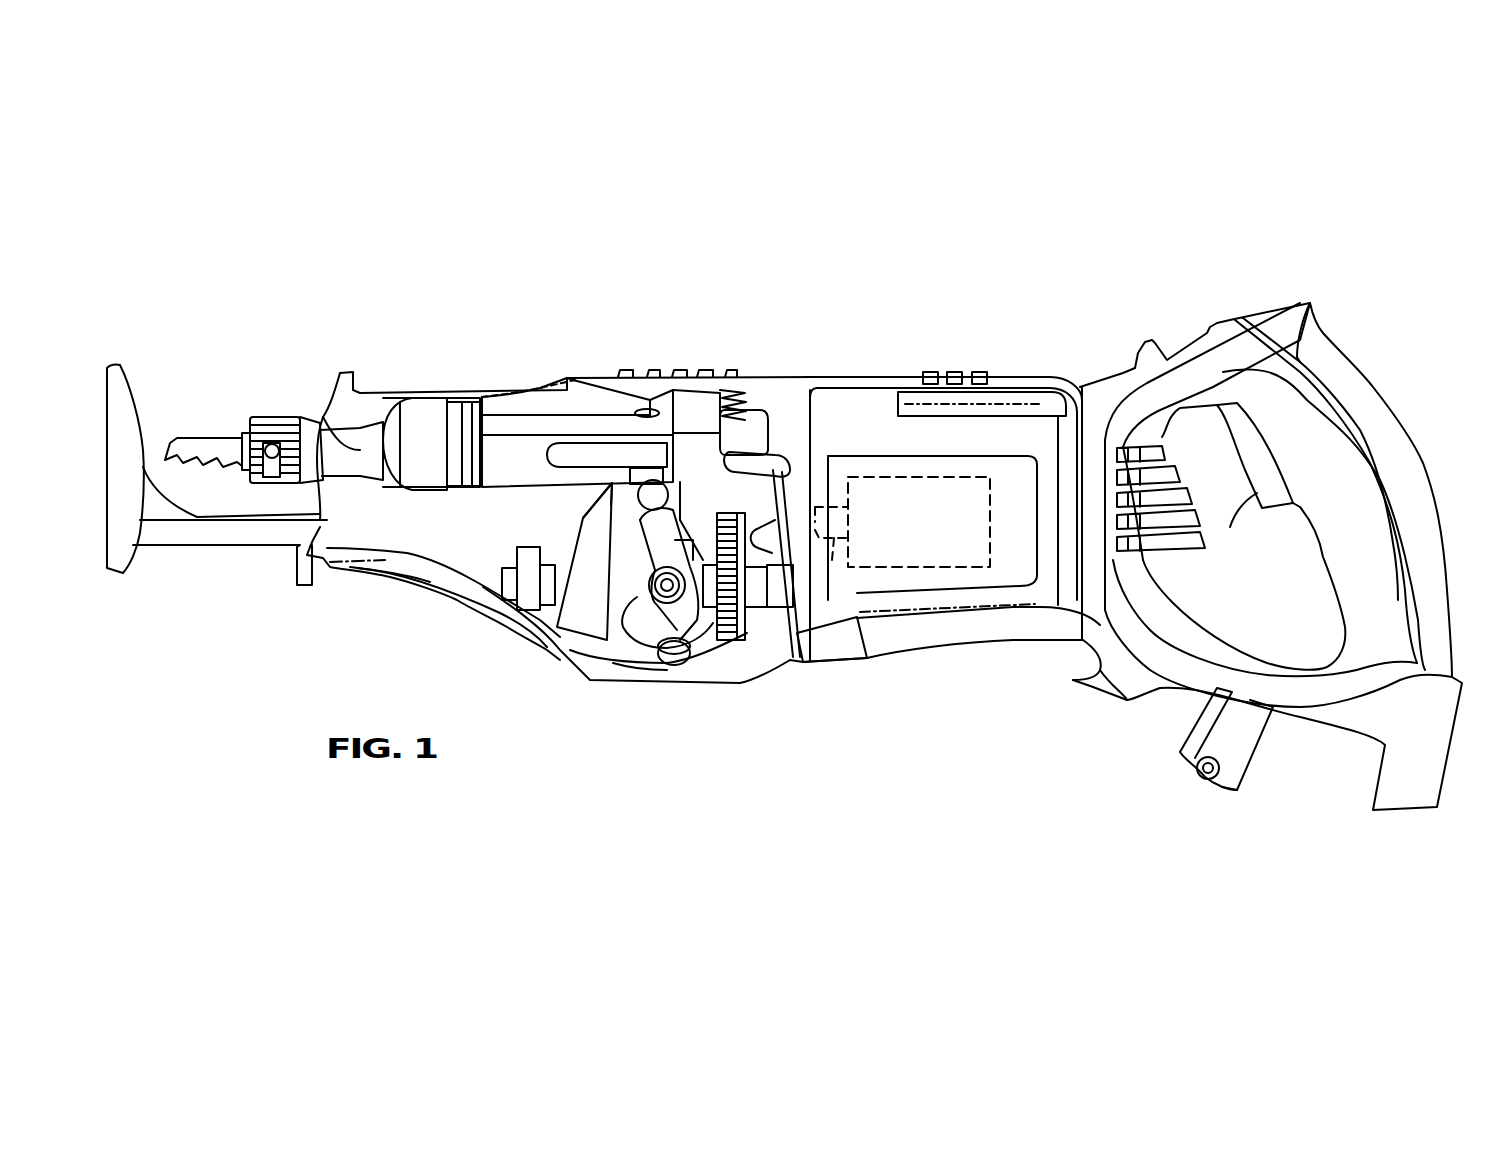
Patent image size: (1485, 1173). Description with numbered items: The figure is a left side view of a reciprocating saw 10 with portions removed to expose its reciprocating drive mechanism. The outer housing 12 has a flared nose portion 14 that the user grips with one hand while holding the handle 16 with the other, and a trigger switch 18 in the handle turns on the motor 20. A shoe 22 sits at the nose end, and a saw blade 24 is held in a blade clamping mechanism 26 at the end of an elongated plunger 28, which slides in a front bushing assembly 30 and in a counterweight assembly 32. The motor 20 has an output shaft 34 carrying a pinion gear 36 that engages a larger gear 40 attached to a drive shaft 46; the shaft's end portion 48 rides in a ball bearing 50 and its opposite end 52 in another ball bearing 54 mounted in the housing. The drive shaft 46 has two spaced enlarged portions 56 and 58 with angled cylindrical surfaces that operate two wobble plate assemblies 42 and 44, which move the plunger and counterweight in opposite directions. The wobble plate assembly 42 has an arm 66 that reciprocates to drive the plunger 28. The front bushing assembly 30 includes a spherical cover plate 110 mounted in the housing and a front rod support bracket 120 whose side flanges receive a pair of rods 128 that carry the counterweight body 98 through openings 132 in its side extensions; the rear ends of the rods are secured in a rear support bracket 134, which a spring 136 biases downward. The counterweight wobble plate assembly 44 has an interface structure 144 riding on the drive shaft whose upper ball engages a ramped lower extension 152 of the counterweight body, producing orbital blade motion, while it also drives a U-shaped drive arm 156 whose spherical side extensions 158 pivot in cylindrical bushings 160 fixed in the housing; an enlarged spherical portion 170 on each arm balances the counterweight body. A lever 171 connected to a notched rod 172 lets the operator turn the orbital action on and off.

The reciprocating saw 10 is at (1030, 278).
The outer housing 12 is at (948, 635).
The nose portion 14 is at (337, 385).
The handle 16 is at (1300, 438).
The trigger switch 18 is at (1257, 493).
The motor 20 is at (880, 478).
The shoe 22 is at (122, 400).
The saw blade 24 is at (194, 447).
The blade clamping mechanism 26 is at (270, 420).
The elongated plunger 28 is at (345, 453).
The front bushing assembly 30 is at (415, 397).
The counterweight assembly 32 is at (625, 388).
The output shaft 34 is at (830, 550).
The pinion gear 36 is at (765, 527).
The larger gear 40 is at (735, 627).
The wobble plate assembly 42 is at (603, 643).
The counterweight wobble plate assembly 44 is at (650, 670).
The drive shaft 46 is at (708, 595).
The end portion 48 is at (778, 600).
The ball bearing 50 is at (795, 667).
The opposite end 52 is at (546, 645).
The ball bearing 54 is at (528, 555).
The enlarged portion 56 is at (565, 552).
The enlarged portion 58 is at (692, 556).
The arm 66 is at (578, 618).
The counterweight body 98 is at (507, 406).
The spherical cover plate 110 is at (413, 465).
The front rod support bracket 120 is at (458, 410).
The rods 128 is at (700, 430).
The openings 132 is at (507, 447).
The rear support bracket 134 is at (742, 427).
The spring 136 is at (734, 405).
The interface structure 144 is at (612, 481).
The lower extension 152 is at (675, 477).
The U-shaped drive arm 156 is at (676, 655).
The spherical side extensions 158 is at (665, 602).
The cylindrical bushings 160 is at (660, 585).
The enlarged spherical portion 170 is at (653, 488).
The lever 171 is at (745, 468).
The rod 172 is at (574, 452).